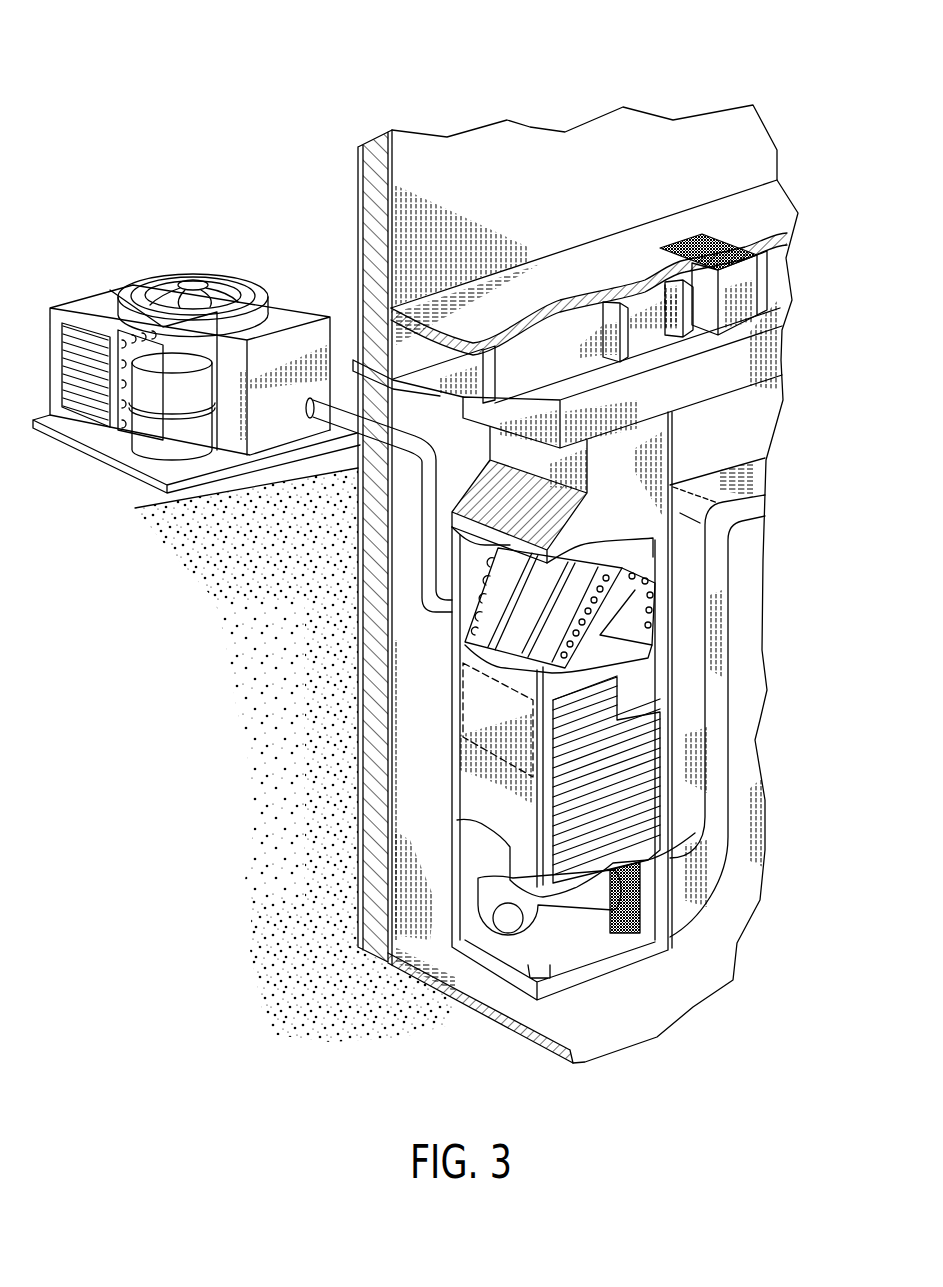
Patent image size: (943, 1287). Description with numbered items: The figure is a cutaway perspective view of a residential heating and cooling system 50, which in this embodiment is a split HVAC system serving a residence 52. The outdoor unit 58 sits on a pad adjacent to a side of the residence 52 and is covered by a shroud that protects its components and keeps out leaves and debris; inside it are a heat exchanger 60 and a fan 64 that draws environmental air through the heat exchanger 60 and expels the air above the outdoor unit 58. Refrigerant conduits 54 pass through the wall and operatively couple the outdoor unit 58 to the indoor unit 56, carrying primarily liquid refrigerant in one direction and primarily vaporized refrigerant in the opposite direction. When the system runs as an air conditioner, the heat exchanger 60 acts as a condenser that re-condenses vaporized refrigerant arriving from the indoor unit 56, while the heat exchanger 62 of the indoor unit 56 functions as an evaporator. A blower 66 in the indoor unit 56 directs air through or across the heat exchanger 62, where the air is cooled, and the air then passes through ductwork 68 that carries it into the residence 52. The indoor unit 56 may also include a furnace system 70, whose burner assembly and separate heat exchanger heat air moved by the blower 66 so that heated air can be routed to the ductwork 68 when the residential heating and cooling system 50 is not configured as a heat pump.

The residential heating and cooling system 50 is at (192, 102).
The residence 52 is at (492, 152).
The refrigerant conduits 54 is at (420, 520).
The indoor unit 56 is at (433, 758).
The outdoor unit 58 is at (196, 337).
The heat exchanger 60 is at (130, 340).
The heat exchanger 62 is at (512, 635).
The fan 64 is at (207, 275).
The blower 66 is at (503, 943).
The ductwork 68 is at (733, 312).
The furnace system 70 is at (463, 717).